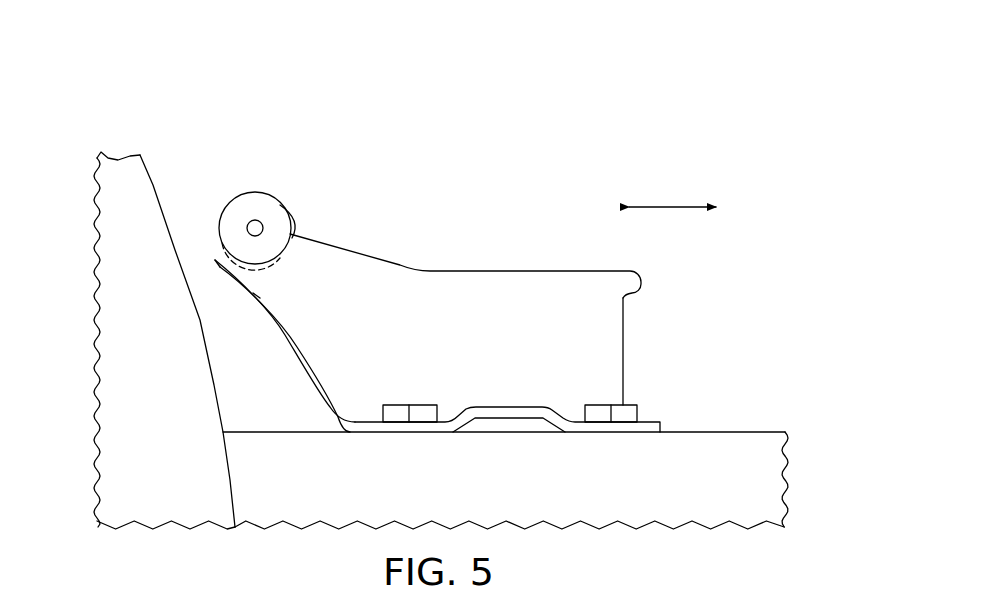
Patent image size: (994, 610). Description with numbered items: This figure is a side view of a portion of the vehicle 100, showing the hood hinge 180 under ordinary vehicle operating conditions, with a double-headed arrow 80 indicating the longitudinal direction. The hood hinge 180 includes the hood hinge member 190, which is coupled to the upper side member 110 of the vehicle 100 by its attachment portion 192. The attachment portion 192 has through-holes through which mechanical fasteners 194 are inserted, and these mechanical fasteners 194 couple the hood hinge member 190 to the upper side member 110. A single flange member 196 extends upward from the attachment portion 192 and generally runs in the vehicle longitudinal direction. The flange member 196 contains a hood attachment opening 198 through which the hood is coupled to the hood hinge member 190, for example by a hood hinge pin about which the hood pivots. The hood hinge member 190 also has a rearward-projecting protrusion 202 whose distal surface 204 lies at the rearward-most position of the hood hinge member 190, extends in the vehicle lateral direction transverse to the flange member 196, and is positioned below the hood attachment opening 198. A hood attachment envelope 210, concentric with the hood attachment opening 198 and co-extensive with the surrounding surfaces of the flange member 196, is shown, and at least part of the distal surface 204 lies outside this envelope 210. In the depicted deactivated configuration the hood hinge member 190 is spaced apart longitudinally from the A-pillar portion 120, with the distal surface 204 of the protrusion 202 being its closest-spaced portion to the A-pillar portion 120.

The direction of movement 80 is at (678, 207).
The vehicle 100 is at (676, 91).
The upper side member 110 is at (758, 430).
The A-pillar portion 120 is at (153, 177).
The hood hinge 180 is at (523, 227).
The hood hinge member 190 is at (630, 318).
The attachment portion 192 is at (660, 422).
The mechanical fasteners 194 is at (389, 405).
The flange member 196 is at (475, 270).
The hood attachment opening 198 is at (262, 223).
The rearward-projecting protrusion 202 is at (205, 246).
The distal surface 204 is at (212, 257).
The hood attachment envelope 210 is at (280, 257).